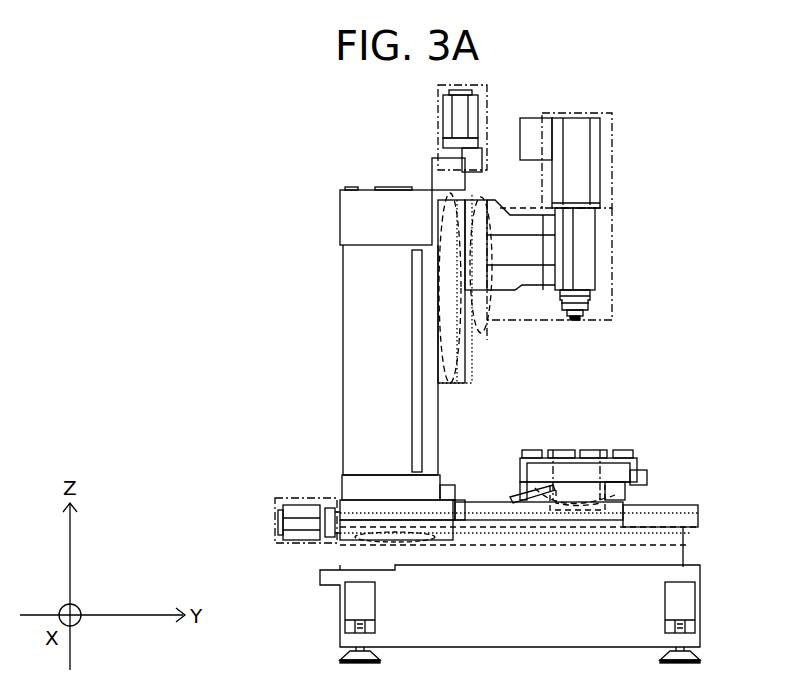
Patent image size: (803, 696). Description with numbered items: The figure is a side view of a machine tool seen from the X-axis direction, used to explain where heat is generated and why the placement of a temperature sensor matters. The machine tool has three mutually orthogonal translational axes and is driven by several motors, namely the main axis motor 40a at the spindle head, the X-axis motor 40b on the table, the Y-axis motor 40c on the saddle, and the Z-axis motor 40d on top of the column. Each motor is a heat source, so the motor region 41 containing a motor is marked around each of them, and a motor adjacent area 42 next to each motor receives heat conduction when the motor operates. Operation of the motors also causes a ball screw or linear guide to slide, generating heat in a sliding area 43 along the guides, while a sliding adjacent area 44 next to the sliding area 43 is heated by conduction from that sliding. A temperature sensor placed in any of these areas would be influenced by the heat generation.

The main axis motor 40a is at (580, 125).
The X-axis motor 40b is at (565, 470).
The Y-axis motor 40c is at (305, 505).
The Z-axis motor 40d is at (460, 117).
The motor region 41 is at (487, 90).
The motor adjacent area 42 is at (430, 168).
The sliding area 43 is at (472, 365).
The sliding adjacent area 44 is at (730, 552).